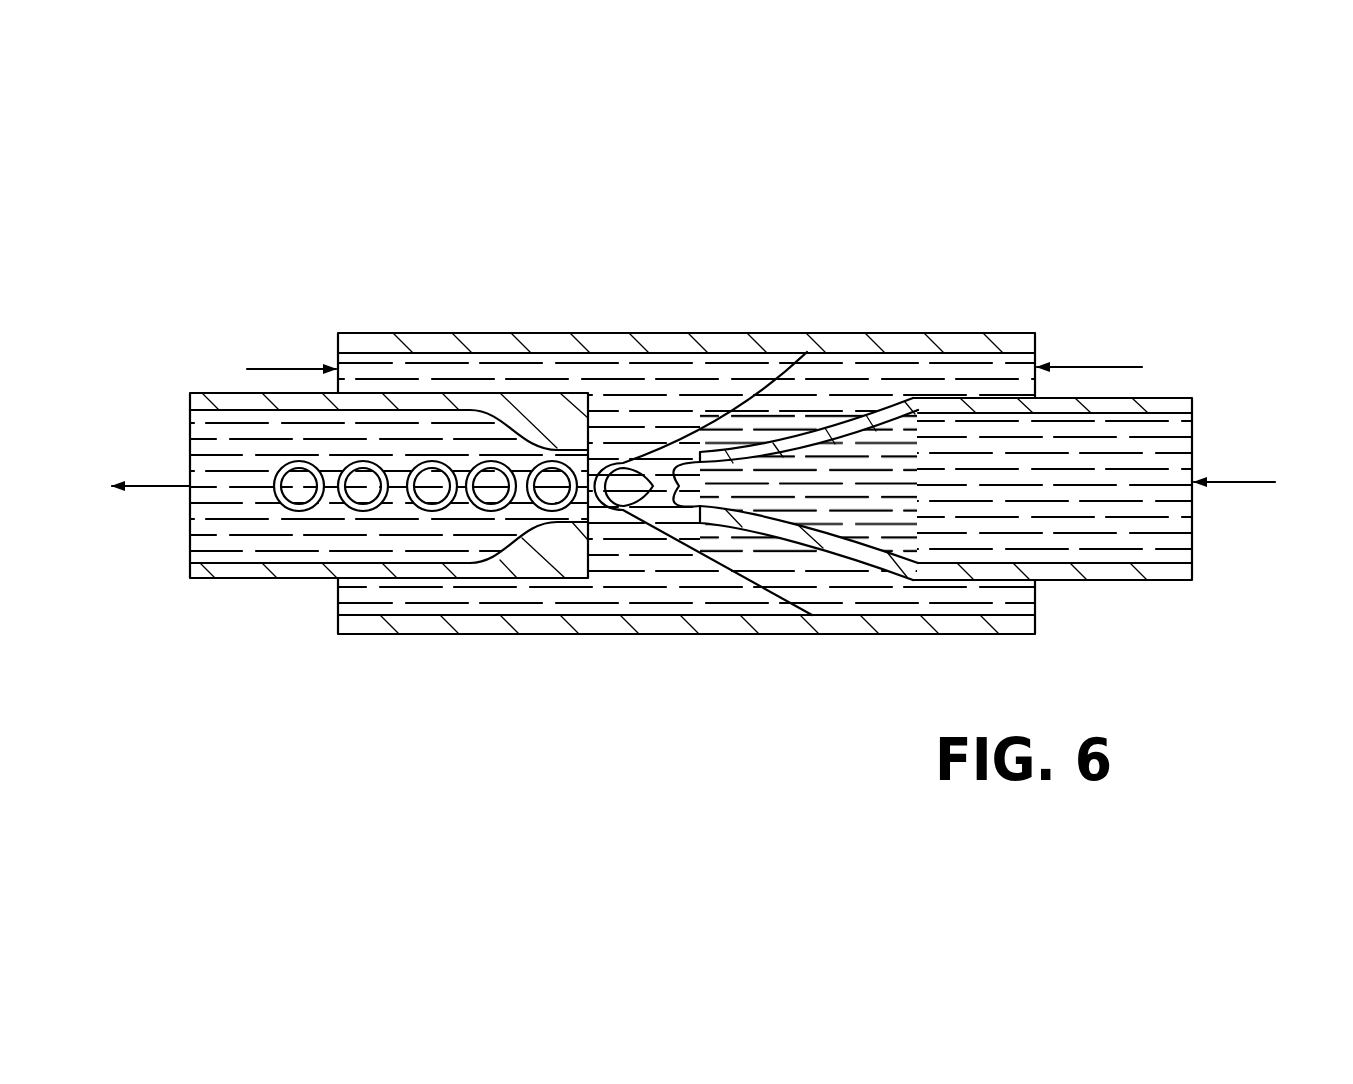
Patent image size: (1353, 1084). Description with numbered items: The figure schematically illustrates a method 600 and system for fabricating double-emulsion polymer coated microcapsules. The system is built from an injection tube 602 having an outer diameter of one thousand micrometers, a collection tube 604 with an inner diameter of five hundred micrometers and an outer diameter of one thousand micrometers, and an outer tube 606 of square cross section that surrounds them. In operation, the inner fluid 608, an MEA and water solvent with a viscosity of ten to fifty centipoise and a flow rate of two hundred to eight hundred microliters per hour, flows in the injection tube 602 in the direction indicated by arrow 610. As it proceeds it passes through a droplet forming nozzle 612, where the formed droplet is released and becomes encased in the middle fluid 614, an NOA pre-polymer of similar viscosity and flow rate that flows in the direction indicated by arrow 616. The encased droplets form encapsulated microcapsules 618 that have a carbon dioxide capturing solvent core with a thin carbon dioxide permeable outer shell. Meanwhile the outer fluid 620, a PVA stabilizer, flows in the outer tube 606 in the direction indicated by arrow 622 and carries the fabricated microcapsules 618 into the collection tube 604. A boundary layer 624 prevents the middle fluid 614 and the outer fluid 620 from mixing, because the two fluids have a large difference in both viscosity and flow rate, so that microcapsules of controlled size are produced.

The method 600 is at (874, 247).
The injection tube 602 is at (1160, 398).
The collection tube 604 is at (287, 581).
The outer tube 606 is at (497, 637).
The inner fluid 608 is at (1165, 545).
The arrow 610 is at (1237, 478).
The droplet forming nozzle 612 is at (702, 450).
The middle fluid 614 is at (860, 378).
The arrow 616 is at (1105, 365).
The encapsulated microcapsules 618 is at (438, 457).
The outer fluid 620 is at (543, 377).
The arrow 622 is at (280, 368).
The boundary layer 624 is at (708, 552).